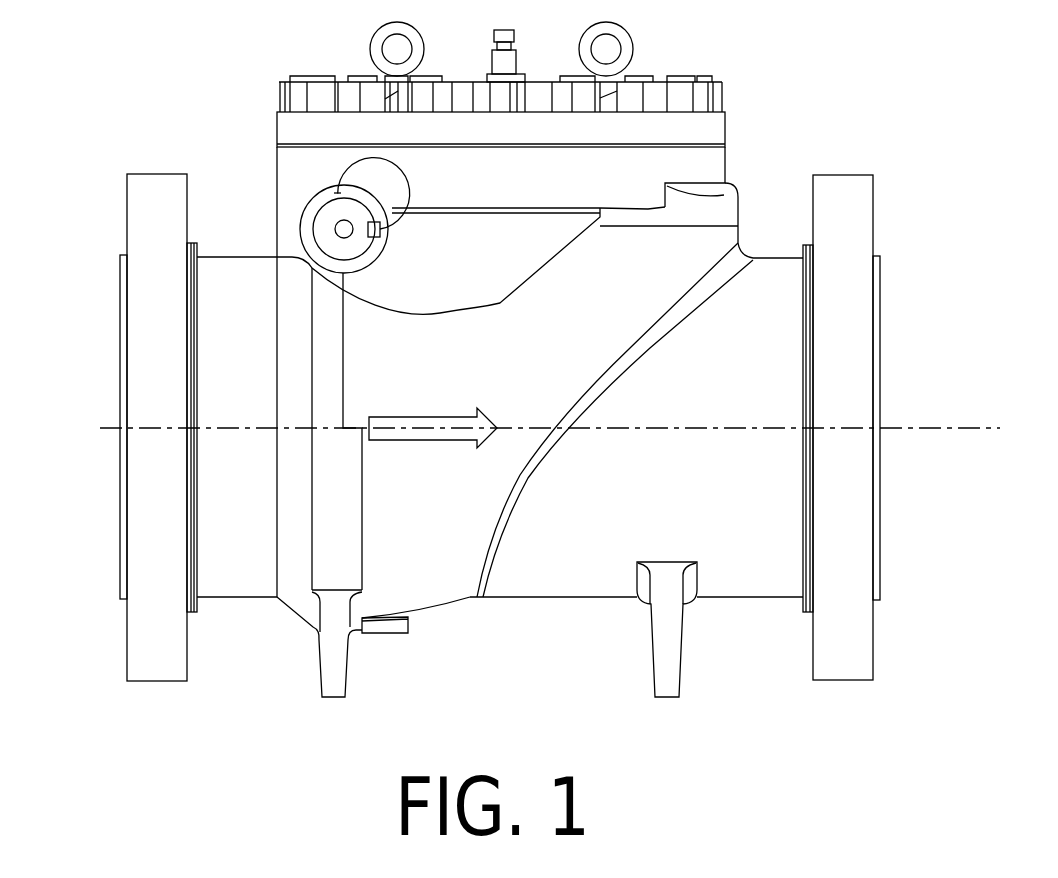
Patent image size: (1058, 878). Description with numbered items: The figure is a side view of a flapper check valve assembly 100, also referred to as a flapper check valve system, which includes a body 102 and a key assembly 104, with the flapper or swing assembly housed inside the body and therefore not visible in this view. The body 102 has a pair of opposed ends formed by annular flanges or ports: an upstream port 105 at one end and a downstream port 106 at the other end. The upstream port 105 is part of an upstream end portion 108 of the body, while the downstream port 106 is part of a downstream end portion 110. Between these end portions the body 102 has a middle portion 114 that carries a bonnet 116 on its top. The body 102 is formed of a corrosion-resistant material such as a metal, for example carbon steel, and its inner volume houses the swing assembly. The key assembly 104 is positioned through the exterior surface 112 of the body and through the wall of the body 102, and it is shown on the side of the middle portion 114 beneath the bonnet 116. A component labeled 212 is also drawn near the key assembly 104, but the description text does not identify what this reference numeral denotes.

The flapper check valve assembly 100 is at (831, 72).
The body 102 is at (335, 517).
The key assembly 104 is at (312, 174).
The upstream port 105 is at (127, 647).
The downstream port 106 is at (873, 648).
The upstream end portion 108 is at (227, 334).
The downstream end portion 110 is at (745, 362).
The exterior surface 112 is at (438, 563).
The middle portion 114 is at (607, 290).
The bonnet 116 is at (727, 152).
The hinge pin 212 is at (323, 225).